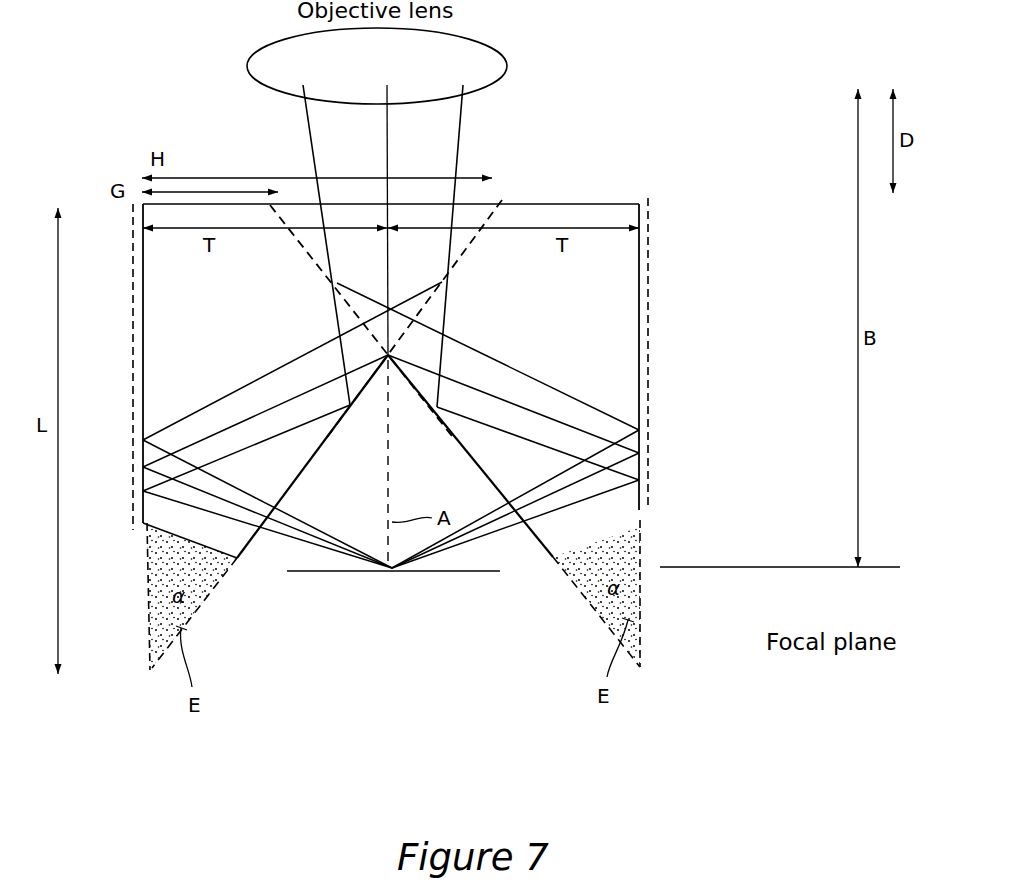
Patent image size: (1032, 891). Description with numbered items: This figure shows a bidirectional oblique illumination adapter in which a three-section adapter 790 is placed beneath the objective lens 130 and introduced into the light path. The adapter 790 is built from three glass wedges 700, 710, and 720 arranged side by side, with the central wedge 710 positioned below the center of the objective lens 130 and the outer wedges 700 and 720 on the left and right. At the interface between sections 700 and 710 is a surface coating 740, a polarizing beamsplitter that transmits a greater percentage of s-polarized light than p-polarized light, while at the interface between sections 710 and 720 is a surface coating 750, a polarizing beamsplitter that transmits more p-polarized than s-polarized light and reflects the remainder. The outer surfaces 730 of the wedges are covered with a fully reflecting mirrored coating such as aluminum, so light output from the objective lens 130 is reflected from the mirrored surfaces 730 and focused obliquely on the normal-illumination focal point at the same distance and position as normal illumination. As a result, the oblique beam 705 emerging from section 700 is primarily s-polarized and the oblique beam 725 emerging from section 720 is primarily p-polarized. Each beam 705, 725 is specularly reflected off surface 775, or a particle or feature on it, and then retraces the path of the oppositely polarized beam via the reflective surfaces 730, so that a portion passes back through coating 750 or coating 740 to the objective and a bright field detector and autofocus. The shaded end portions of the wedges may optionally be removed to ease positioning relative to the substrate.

The objective lens 130 is at (492, 56).
The glass wedge 700 is at (176, 325).
The oblique beam 705 is at (322, 552).
The glass wedge 710 is at (430, 249).
The glass wedge 720 is at (603, 325).
The oblique beam 725 is at (482, 552).
The mirrored surfaces 730 is at (133, 422).
The surface coating 740 is at (305, 247).
The surface coating 750 is at (470, 247).
The surface 775 is at (393, 483).
The three-section adapter 790 is at (672, 230).